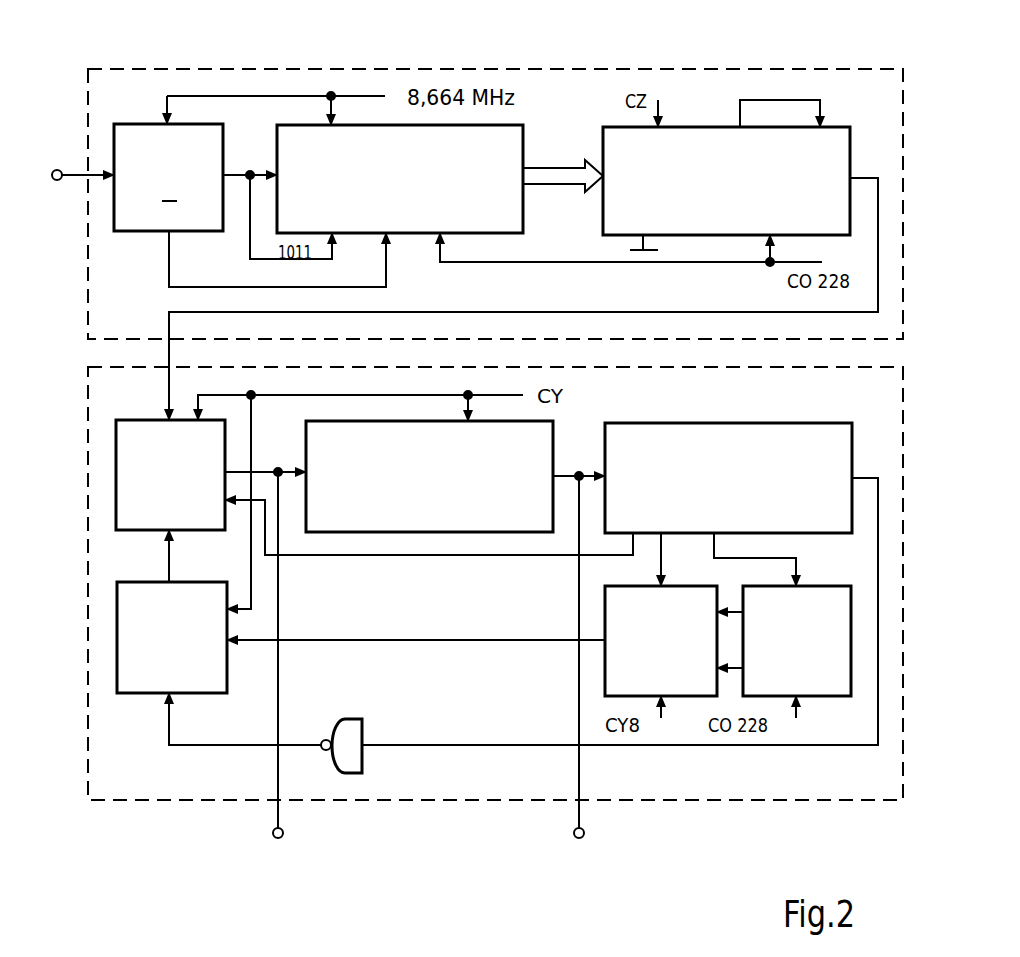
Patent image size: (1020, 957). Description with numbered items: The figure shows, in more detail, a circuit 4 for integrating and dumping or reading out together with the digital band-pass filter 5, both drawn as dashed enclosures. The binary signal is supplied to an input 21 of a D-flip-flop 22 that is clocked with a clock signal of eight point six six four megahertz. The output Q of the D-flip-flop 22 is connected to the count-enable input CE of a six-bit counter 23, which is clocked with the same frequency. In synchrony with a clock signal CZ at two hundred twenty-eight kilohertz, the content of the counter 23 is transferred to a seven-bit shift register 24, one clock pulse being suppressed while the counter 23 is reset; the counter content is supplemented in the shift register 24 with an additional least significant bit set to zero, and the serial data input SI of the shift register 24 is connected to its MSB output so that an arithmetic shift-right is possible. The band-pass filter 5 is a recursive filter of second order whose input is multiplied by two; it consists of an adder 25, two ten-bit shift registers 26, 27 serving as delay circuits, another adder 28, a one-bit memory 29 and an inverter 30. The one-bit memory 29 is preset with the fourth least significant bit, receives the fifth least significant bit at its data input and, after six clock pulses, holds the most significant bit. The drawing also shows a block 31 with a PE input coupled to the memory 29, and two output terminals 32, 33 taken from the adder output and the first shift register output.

The circuit for integrating and dumping 4 is at (90, 105).
The digital band-pass filter 5 is at (96, 366).
The input 21 is at (57, 170).
The D-flip-flop 22 is at (225, 141).
The 6 bit counter 23 is at (525, 136).
The 7 bit shift register 24 is at (852, 147).
The adder 25 is at (137, 530).
The shift register 26 is at (306, 443).
The shift register 27 is at (852, 443).
The adder 28 is at (137, 693).
The 1 bit memory 29 is at (701, 585).
The inverter 30 is at (365, 722).
The set-reset control block 31 is at (829, 586).
The first output terminal 32 is at (284, 836).
The second output terminal 33 is at (585, 836).